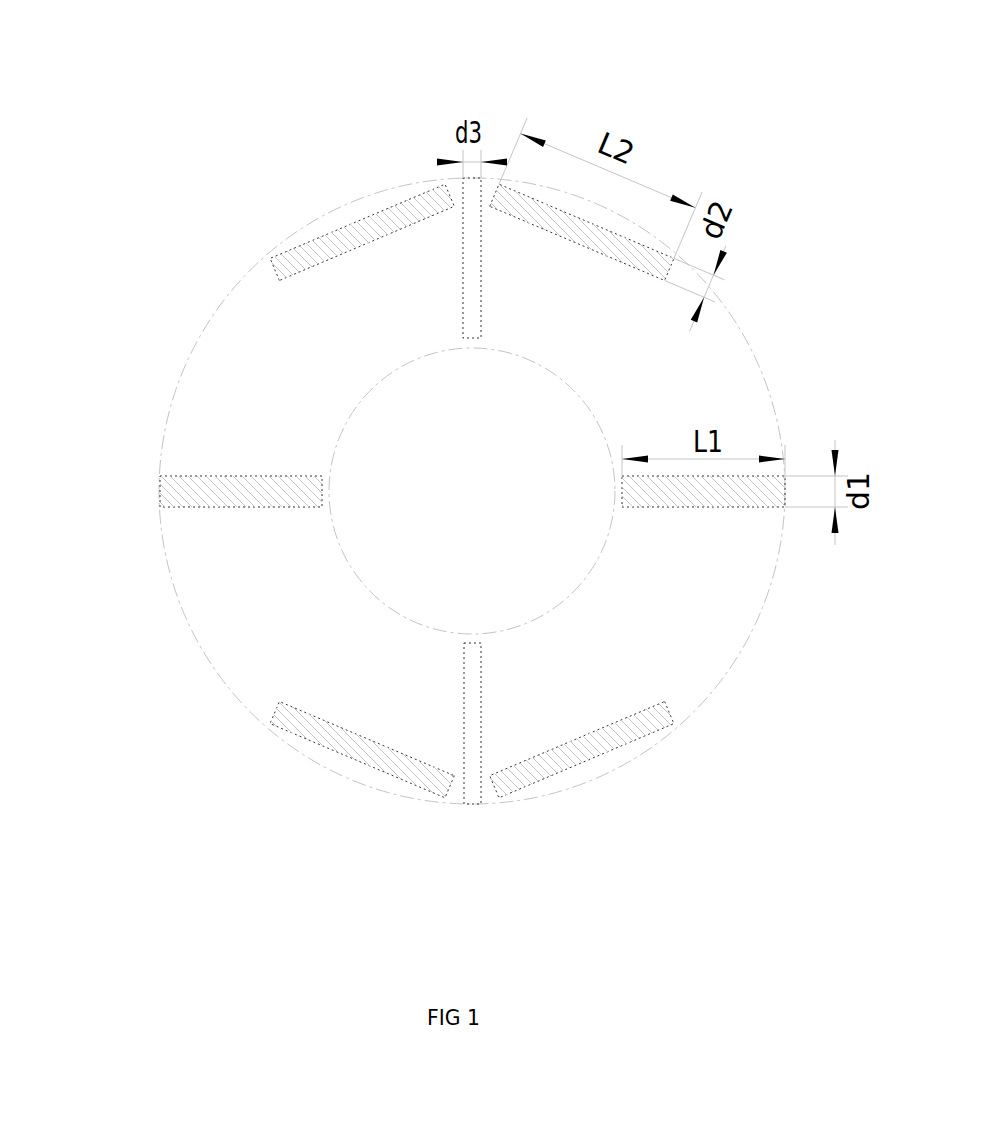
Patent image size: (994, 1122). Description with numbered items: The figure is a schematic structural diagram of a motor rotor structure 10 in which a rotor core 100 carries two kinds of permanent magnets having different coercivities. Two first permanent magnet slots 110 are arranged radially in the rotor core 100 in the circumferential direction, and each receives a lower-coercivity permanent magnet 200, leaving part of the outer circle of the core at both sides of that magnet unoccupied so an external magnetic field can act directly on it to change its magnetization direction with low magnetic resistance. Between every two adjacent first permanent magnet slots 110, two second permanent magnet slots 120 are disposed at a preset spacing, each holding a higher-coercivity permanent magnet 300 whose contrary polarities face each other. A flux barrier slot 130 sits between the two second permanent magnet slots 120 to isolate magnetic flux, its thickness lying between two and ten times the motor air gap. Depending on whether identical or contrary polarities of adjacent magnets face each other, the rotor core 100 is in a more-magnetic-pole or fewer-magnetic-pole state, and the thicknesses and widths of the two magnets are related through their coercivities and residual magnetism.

The motor rotor structure 10 is at (122, 45).
The rotor core 100 is at (750, 350).
The first permanent magnet slot 110 is at (157, 490).
The second permanent magnet slot 120 is at (276, 270).
The flux barrier slot 130 is at (481, 781).
The lower-coercivity permanent magnet 200 is at (218, 485).
The higher-coercivity permanent magnet 300 is at (356, 233).